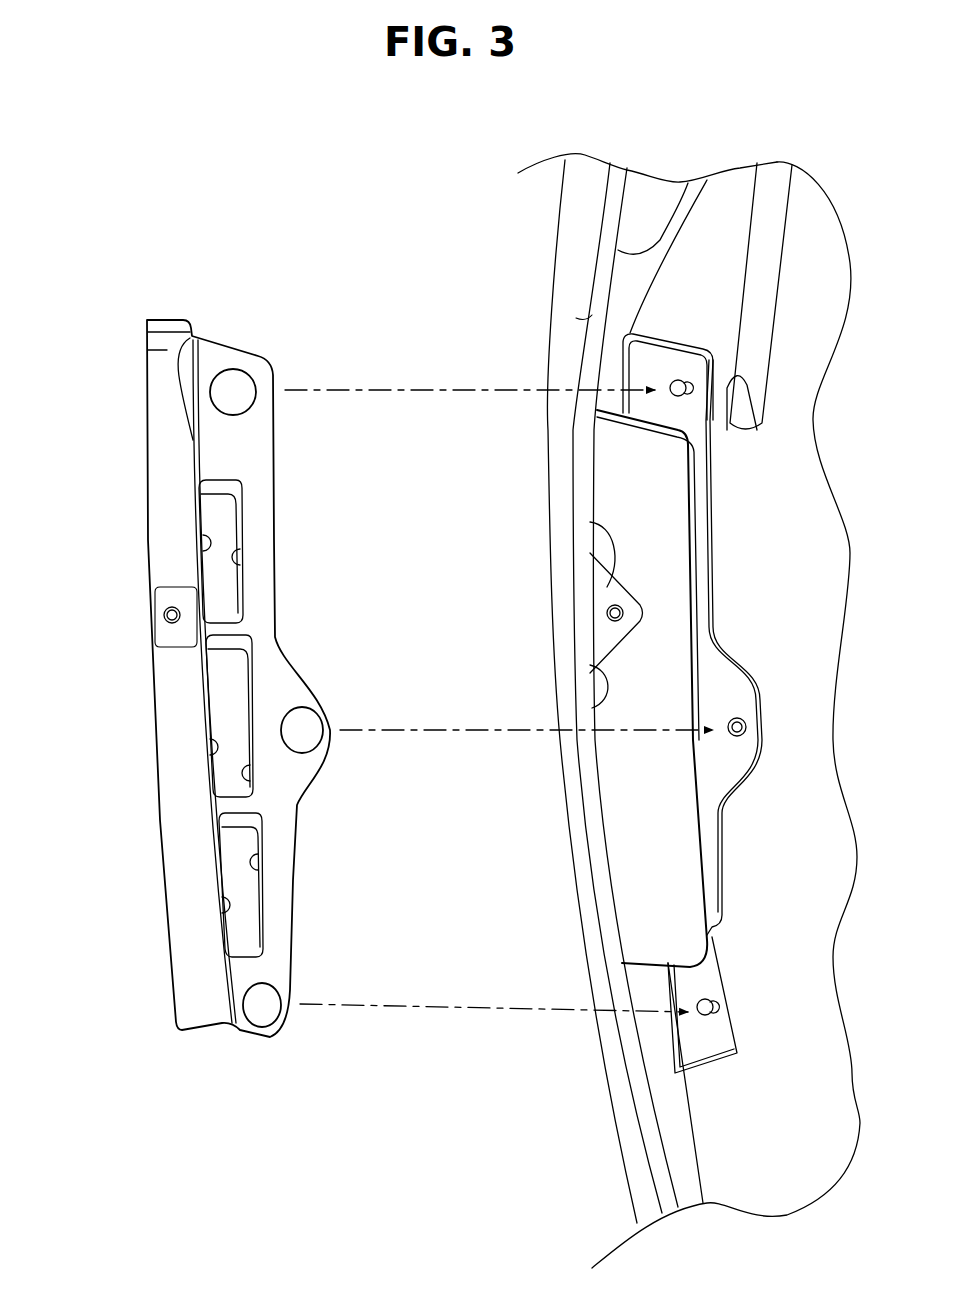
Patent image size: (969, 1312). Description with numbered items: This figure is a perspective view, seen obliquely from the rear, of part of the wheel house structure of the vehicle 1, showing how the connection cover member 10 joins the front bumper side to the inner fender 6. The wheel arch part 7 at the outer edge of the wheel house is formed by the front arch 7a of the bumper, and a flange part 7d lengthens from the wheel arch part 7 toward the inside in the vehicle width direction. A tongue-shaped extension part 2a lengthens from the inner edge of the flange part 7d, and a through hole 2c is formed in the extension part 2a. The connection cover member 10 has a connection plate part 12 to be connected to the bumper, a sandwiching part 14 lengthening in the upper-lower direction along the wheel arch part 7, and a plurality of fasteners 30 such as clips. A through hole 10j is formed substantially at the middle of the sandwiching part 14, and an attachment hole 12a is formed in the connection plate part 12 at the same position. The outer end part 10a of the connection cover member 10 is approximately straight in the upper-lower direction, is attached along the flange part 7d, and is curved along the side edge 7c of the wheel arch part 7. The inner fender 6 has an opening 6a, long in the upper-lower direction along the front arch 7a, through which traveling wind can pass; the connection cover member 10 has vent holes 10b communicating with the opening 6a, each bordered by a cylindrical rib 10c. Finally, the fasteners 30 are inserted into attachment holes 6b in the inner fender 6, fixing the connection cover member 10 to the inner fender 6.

The vehicle 1 is at (553, 232).
The wheel arch part 7 is at (617, 177).
The front arch 7a is at (590, 322).
The side edge 7c is at (590, 665).
The flange part 7d is at (580, 600).
The extension part 2a is at (590, 538).
The through hole 2c is at (612, 615).
The inner fender 6 is at (813, 230).
The opening 6a is at (688, 538).
The attachment holes 6b is at (690, 392).
The connection cover member 10 is at (278, 352).
The outer end part 10a is at (145, 440).
The vent holes 10b is at (205, 543).
The ribs 10c is at (235, 557).
The through hole 10j is at (195, 635).
The connection plate part 12 is at (195, 580).
The attachment hole 12a is at (165, 615).
The sandwiching part 14 is at (180, 697).
The fasteners 30 is at (233, 392).